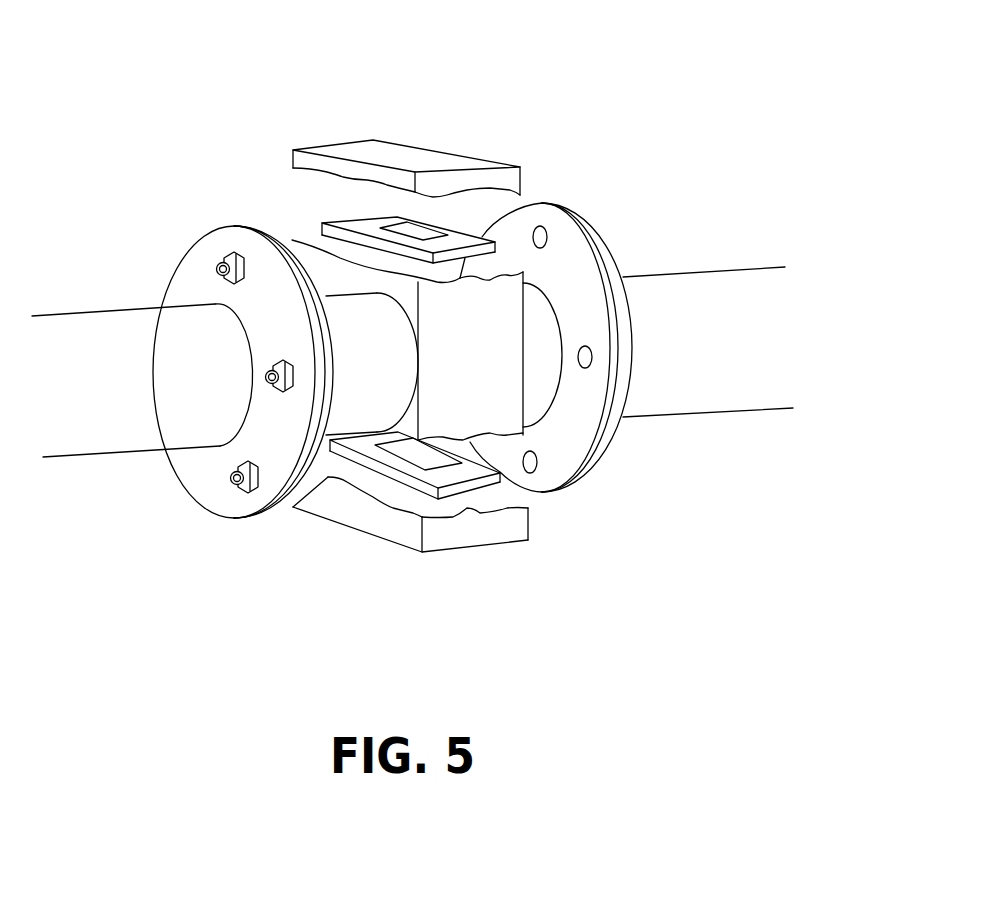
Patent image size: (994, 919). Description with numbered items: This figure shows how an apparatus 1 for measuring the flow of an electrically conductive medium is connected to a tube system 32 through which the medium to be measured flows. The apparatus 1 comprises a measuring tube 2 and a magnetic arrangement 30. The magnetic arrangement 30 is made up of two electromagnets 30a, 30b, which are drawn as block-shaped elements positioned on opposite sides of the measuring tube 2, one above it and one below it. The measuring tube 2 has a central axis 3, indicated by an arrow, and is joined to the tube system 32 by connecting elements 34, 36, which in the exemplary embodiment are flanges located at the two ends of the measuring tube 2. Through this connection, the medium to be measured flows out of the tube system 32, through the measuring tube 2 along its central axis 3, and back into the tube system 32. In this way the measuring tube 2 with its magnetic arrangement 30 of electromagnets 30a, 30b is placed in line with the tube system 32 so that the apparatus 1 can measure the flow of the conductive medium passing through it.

The apparatus 1 is at (78, 67).
The measuring tube 2 is at (381, 373).
The central axis 3 is at (826, 331).
The magnetic arrangement 30 is at (400, 155).
The electromagnet 30a is at (347, 218).
The electromagnet 30b is at (482, 478).
The tube system 32 is at (720, 268).
The connecting element 34 is at (273, 515).
The connecting element 36 is at (565, 462).